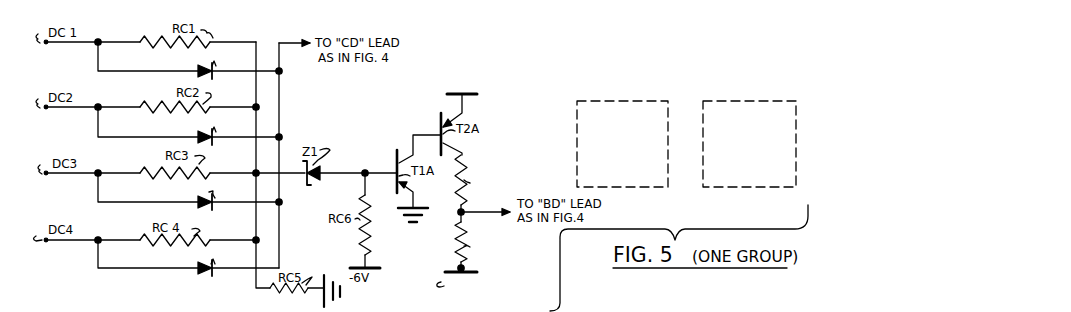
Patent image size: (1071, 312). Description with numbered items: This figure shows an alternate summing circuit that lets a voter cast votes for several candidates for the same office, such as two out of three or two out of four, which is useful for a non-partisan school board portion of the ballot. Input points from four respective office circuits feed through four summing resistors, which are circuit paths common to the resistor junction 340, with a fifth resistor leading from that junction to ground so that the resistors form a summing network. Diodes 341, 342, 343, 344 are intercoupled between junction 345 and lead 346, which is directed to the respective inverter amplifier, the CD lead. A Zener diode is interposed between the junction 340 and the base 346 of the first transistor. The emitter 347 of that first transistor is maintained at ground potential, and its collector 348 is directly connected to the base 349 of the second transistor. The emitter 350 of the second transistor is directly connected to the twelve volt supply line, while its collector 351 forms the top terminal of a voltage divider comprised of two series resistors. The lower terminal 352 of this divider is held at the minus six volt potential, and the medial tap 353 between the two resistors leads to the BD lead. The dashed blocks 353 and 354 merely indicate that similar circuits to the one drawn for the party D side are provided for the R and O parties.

The resistor junction 340 is at (254, 239).
The diode 341 is at (196, 70).
The diode 342 is at (196, 136).
The diode 343 is at (196, 200).
The diode 344 is at (196, 272).
The junction 345 is at (282, 202).
The lead 346 is at (280, 42).
The emitter 347 is at (446, 191).
The collector 348 is at (404, 153).
The base 349 is at (440, 126).
The emitter 350 is at (455, 116).
The collector 351 is at (462, 150).
The terminal 352 is at (466, 269).
The medial tap 353 is at (463, 210).
The block diagram 354 is at (726, 104).